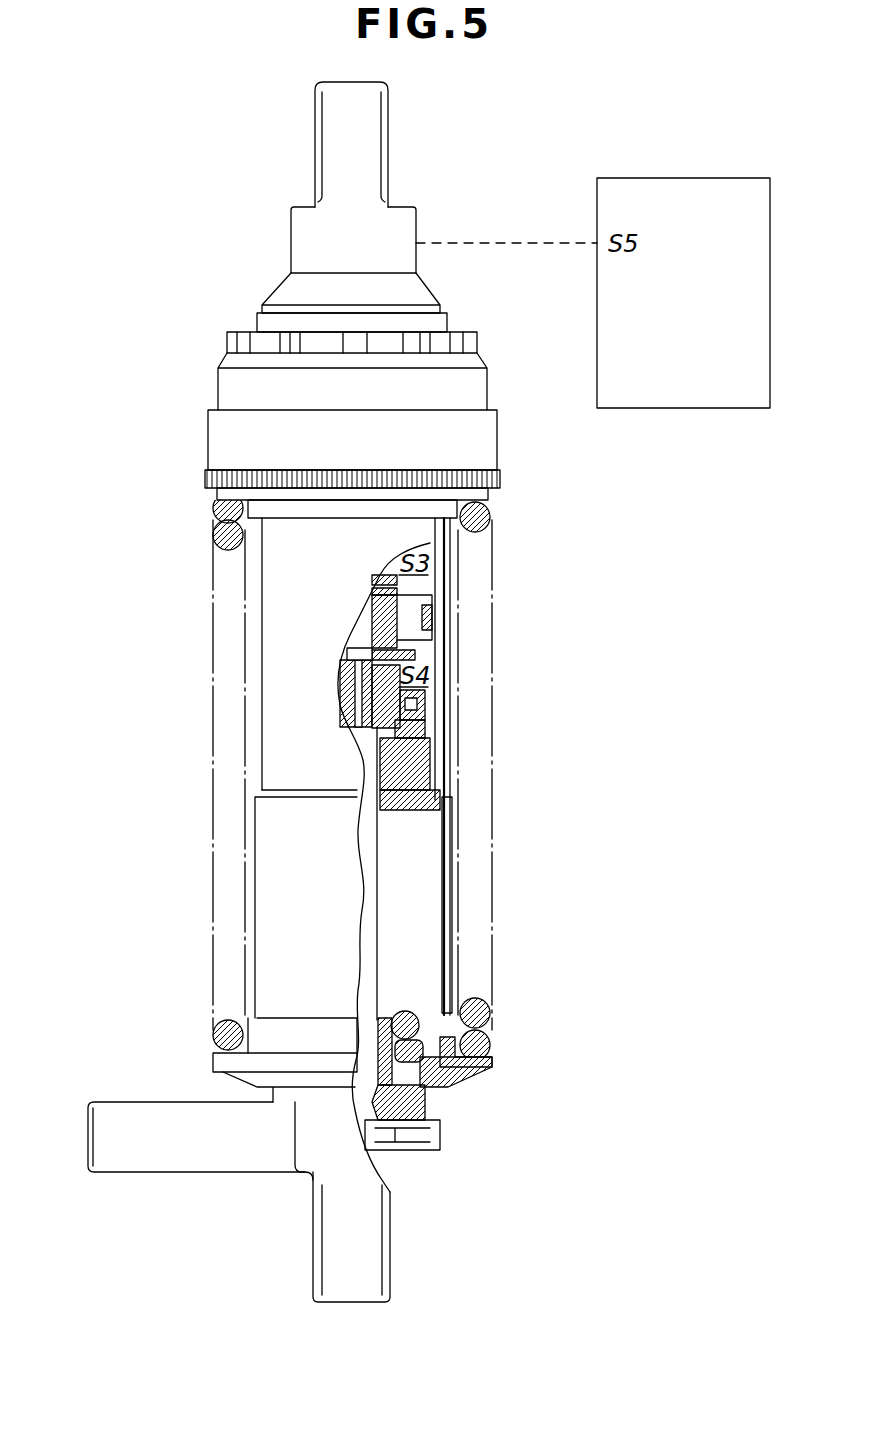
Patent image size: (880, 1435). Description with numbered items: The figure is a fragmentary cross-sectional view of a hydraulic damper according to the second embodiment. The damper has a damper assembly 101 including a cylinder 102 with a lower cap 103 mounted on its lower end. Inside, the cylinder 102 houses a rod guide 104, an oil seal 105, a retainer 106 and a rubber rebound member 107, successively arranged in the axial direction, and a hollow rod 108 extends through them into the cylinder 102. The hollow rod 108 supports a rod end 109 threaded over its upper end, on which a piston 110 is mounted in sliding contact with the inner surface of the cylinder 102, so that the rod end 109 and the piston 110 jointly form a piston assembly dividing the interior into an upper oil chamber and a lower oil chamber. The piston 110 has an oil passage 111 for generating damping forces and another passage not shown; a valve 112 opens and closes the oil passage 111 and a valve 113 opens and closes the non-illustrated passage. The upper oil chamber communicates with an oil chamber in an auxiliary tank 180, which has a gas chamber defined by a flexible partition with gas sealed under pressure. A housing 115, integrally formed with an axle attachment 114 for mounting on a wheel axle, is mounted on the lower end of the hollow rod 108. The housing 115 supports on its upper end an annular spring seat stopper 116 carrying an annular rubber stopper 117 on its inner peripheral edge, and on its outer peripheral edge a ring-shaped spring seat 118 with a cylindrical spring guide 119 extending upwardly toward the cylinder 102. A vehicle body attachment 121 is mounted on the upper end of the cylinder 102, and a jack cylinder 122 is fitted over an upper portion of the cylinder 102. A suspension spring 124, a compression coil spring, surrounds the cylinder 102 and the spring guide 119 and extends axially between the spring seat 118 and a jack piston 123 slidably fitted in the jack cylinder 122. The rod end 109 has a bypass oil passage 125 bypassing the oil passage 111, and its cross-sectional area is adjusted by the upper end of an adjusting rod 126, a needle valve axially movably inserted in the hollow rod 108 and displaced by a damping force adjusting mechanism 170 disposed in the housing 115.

The damper assembly 101 is at (505, 768).
The cylinder 102 is at (440, 583).
The lower cap 103 is at (440, 808).
The rod guide 104 is at (415, 752).
The oil seal 105 is at (425, 733).
The retainer 106 is at (445, 714).
The rubber rebound member 107 is at (415, 703).
The hollow rod 108 is at (370, 913).
The rod end 109 is at (360, 645).
The piston 110 is at (377, 612).
The oil passage 111 is at (425, 610).
The valve 112 is at (400, 653).
The valve 113 is at (405, 592).
The axle attachment 114 is at (360, 1255).
The housing 115 is at (408, 1103).
The annular spring seat stopper 116 is at (472, 1075).
The annular rubber stopper 117 is at (412, 1022).
The spring seat 118 is at (493, 1053).
The cylindrical spring guide 119 is at (452, 862).
The vehicle body attachment 121 is at (300, 227).
The jack cylinder 122 is at (215, 432).
The jack piston 123 is at (222, 497).
The suspension spring 124 is at (222, 815).
The bypass oil passage 125 is at (345, 668).
The adjusting rod 126 is at (355, 705).
The damping force adjusting mechanism 170 is at (200, 1250).
The auxiliary tank 180 is at (677, 185).